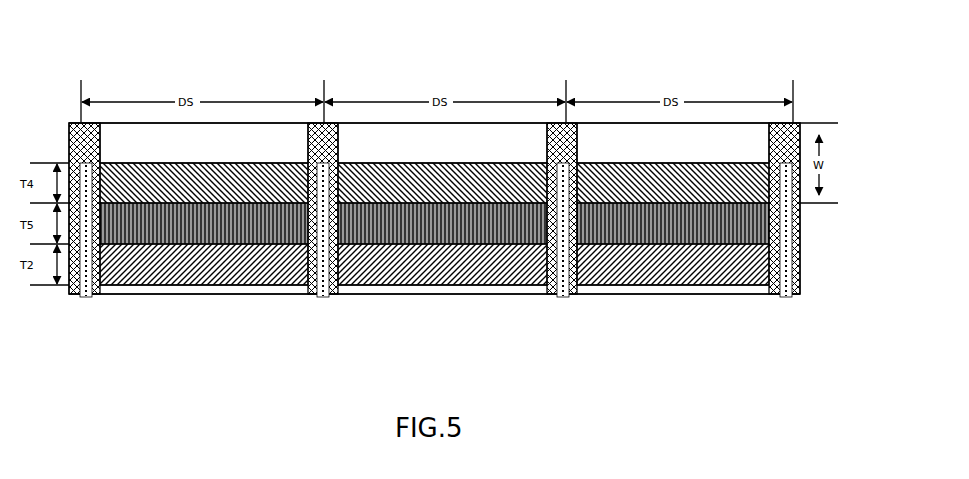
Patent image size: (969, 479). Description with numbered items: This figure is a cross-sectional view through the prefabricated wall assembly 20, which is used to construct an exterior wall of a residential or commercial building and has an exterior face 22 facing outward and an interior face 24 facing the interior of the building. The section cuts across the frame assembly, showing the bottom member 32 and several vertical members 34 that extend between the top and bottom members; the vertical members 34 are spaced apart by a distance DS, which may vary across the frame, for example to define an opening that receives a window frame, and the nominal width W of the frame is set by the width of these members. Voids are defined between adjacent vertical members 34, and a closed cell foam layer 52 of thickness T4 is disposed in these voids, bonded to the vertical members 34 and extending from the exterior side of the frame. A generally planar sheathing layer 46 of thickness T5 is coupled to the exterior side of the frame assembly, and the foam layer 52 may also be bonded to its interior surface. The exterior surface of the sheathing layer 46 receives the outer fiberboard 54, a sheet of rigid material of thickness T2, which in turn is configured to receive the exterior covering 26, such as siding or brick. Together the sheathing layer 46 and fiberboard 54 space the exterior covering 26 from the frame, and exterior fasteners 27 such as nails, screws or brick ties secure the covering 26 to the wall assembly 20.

The wall assembly 20 is at (824, 76).
The exterior face 22 is at (437, 297).
The interior face 24 is at (491, 68).
The exterior covering 26 is at (614, 300).
The exterior fasteners 27 is at (85, 310).
The bottom member 32 is at (608, 148).
The vertical members 34 is at (342, 125).
The sheathing layer 46 is at (172, 213).
The closed cell foam layer 52 is at (398, 176).
The outer fiberboard 54 is at (205, 280).